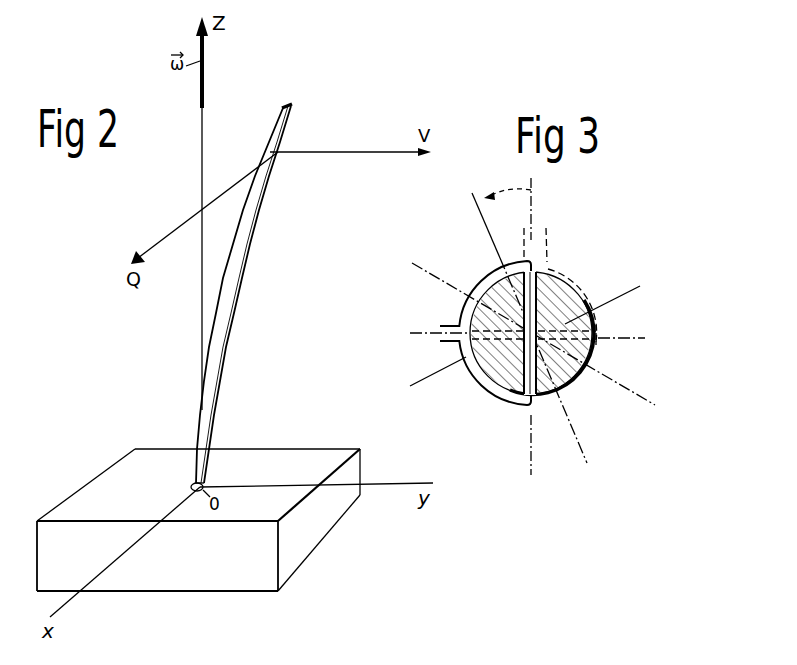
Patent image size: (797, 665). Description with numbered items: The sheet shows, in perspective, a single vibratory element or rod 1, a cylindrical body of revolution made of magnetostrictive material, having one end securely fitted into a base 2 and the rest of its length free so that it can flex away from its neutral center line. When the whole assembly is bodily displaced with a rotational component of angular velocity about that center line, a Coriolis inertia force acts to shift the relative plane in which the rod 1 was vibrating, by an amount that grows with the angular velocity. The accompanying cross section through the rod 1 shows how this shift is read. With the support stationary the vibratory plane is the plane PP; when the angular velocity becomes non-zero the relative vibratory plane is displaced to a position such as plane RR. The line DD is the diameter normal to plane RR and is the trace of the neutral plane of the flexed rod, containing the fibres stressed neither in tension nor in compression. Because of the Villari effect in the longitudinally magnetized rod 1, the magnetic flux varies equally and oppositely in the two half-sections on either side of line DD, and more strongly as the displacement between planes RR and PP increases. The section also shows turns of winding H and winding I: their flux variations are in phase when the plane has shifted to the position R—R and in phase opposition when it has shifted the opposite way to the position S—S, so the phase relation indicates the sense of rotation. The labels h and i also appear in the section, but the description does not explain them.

In FIG. 2, the vibratory element or rod 1 is at (238, 253).
In FIG. 3, the vibratory element or rod 1 is at (570, 377).
In FIG. 2, the base 2 is at (305, 546).
In FIG. 3, the turn of winding H is at (492, 399).
In FIG. 3, the plane PP P is at (524, 326).
In FIG. 3, the line DD D is at (526, 328).
In FIG. 3, the position S— S is at (525, 332).
In FIG. 3, the plane RR R is at (525, 330).
In FIG. 3, the turn of winding I is at (568, 283).
In FIG. 3, the slot height h is at (523, 362).
In FIG. 3, the angle i is at (550, 327).